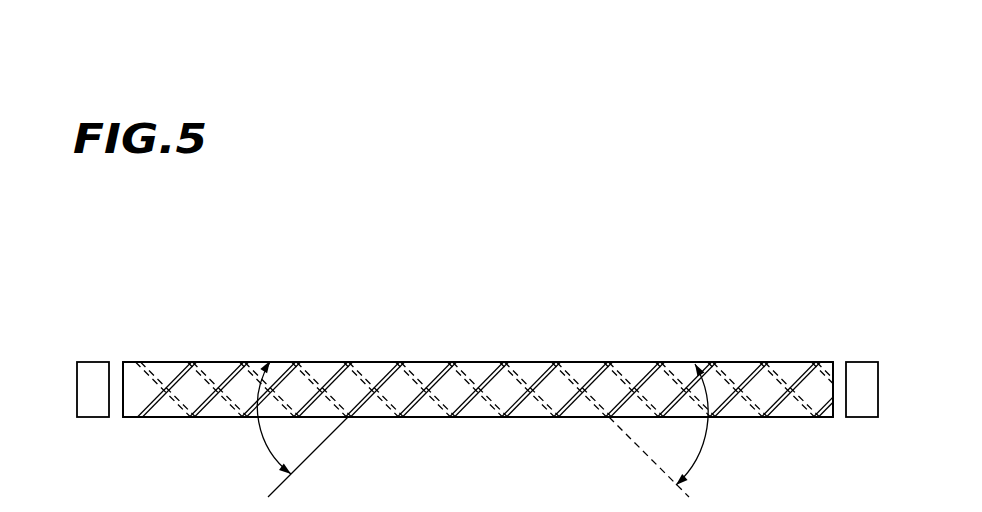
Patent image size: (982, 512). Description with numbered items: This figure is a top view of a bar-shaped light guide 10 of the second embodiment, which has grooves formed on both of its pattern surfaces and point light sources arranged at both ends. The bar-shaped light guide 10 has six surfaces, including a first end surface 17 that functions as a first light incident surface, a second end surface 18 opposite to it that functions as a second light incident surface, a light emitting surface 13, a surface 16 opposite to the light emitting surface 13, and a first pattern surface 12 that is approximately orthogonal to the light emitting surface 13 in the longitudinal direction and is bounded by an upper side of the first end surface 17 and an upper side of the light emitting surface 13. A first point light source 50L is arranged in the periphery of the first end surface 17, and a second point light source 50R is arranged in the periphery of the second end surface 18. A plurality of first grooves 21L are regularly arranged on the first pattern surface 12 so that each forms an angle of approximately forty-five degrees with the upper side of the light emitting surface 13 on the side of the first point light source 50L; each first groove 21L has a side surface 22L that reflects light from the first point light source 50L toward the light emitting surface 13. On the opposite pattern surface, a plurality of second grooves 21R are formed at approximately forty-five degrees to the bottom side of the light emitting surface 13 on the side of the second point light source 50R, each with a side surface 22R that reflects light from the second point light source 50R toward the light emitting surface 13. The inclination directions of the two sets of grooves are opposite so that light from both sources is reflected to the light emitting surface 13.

The bar-shaped light guide 10 is at (523, 422).
The first pattern surface 12 is at (562, 387).
The light emitting surface 13 is at (475, 362).
The surface opposite to the light emitting surface 16 is at (583, 418).
The first end surface 17 is at (122, 378).
The second end surface 18 is at (833, 400).
The first grooves 21L is at (232, 370).
The second grooves 21R is at (677, 373).
The side surface of the first groove 22L is at (202, 400).
The side surface of the second groove 22R is at (718, 390).
The first point light source 50L is at (77, 387).
The second point light source 50R is at (860, 378).